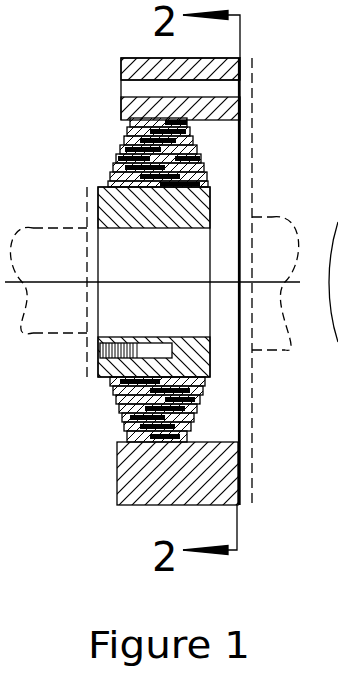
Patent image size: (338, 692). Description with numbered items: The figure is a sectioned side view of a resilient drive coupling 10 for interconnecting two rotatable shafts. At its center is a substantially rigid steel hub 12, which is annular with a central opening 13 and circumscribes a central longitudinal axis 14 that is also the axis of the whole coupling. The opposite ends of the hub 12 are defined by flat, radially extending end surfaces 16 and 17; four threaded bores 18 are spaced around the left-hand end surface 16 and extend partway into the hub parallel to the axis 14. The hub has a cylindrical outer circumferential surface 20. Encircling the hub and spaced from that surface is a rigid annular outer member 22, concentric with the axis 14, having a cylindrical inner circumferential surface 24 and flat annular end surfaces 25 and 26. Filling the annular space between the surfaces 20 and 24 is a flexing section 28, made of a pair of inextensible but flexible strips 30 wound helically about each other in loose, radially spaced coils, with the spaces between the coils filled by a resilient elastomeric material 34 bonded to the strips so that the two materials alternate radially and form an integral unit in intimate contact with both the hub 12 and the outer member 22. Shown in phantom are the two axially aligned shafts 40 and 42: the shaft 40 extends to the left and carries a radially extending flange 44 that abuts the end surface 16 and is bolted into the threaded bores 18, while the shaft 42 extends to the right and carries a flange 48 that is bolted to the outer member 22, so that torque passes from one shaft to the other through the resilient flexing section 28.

The resilient drive coupling 10 is at (82, 125).
The hub 12 is at (193, 363).
The central opening 13 is at (174, 229).
The central longitudinal axis 14 is at (55, 282).
The end surface 16 is at (118, 408).
The end surface 17 is at (210, 350).
The threaded bore 18 is at (150, 318).
The outer circumferential surface 20 is at (163, 268).
The annular outer member 22 is at (185, 488).
The inner circumferential surface 24 is at (212, 121).
The end surface 25 is at (121, 75).
The end surface 26 is at (187, 272).
The flexing section 28 is at (205, 420).
The strip 30 is at (205, 180).
The resilient material 34 is at (118, 442).
The shaft 40 is at (52, 228).
The shaft 42 is at (286, 222).
The flange 44 is at (92, 365).
The flange 48 is at (252, 492).